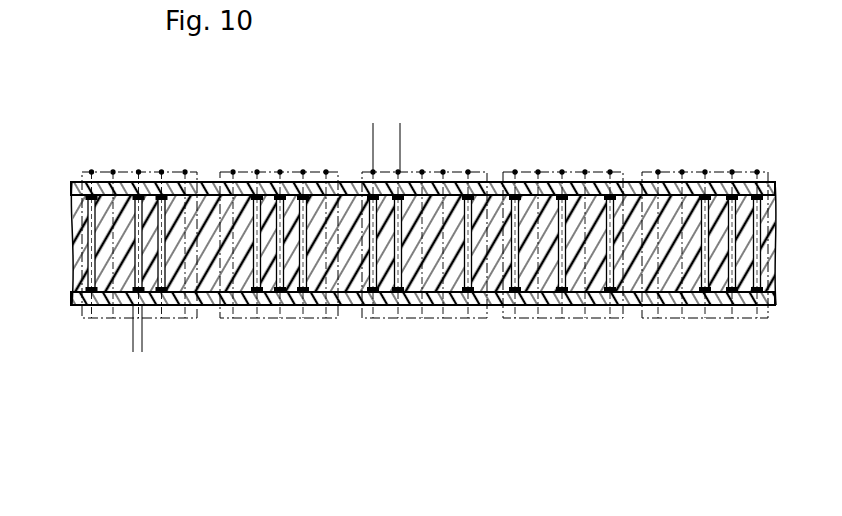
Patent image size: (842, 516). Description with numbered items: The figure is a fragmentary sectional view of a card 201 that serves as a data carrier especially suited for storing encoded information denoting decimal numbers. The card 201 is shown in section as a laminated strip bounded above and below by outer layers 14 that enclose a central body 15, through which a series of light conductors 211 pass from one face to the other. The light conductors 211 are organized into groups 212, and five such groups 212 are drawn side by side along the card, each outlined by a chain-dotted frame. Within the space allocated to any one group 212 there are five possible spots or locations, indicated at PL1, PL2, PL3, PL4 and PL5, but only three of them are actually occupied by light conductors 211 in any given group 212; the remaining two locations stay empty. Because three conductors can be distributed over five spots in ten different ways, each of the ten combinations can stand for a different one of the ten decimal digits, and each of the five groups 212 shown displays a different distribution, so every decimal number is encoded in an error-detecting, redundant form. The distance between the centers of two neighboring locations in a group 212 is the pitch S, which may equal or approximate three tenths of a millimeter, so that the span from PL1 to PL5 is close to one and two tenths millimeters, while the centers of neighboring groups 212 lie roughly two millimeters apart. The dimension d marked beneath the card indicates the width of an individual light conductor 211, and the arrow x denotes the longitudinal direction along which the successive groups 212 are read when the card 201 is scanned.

The cover plate 14 is at (72, 186).
The heat exchanger body 15 is at (76, 212).
The card 201 is at (455, 332).
The light conductor 211 is at (140, 243).
The group of light conductors 212 is at (95, 319).
The first location PL1 is at (92, 171).
The second location PL2 is at (113, 171).
The third location PL3 is at (138, 171).
The fourth location PL4 is at (162, 171).
The fifth location PL5 is at (185, 171).
The pipe diameter d is at (162, 345).
The distance between centers of neighboring locations S is at (423, 132).
The longitudinal direction x is at (764, 359).